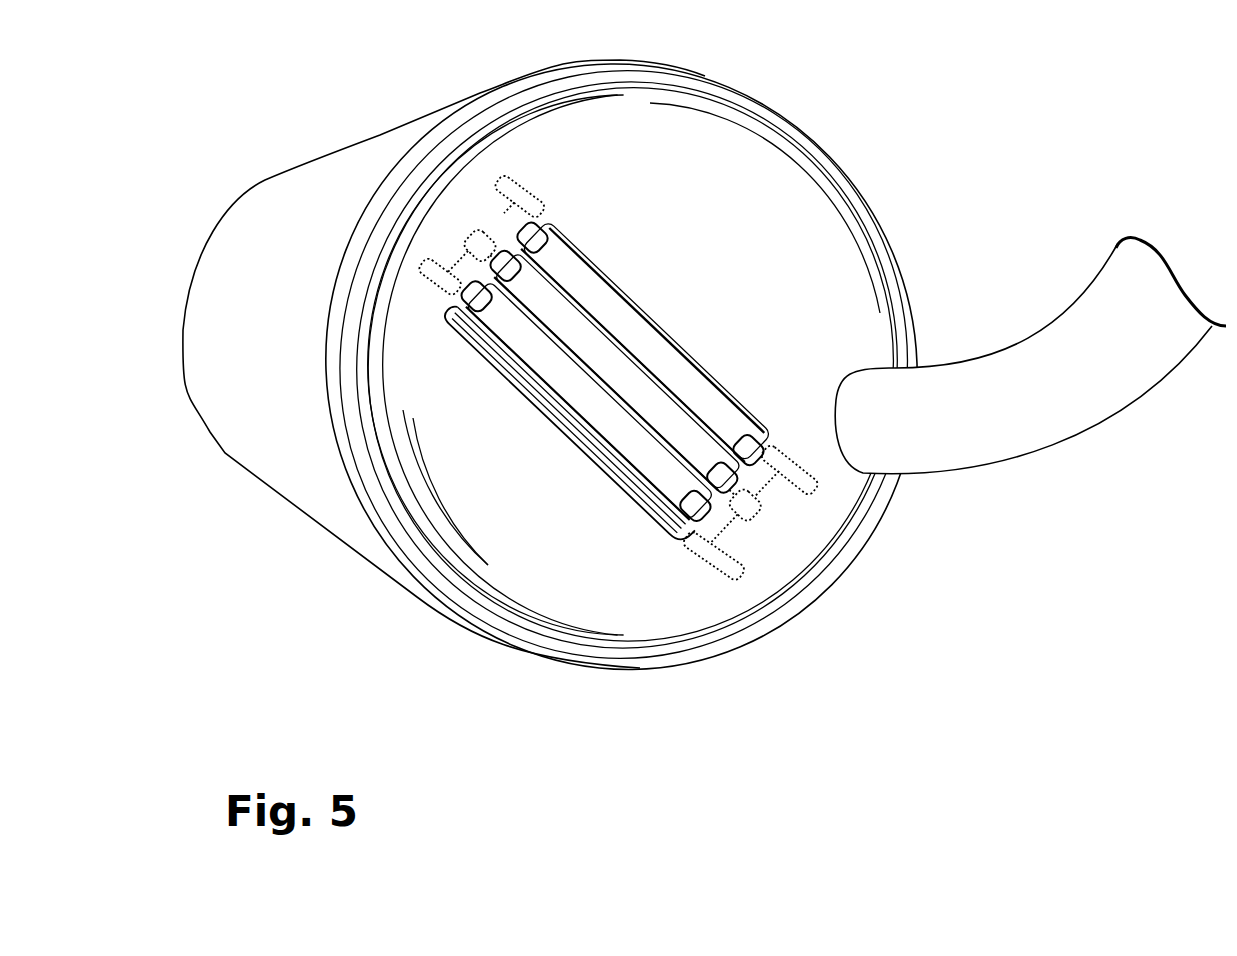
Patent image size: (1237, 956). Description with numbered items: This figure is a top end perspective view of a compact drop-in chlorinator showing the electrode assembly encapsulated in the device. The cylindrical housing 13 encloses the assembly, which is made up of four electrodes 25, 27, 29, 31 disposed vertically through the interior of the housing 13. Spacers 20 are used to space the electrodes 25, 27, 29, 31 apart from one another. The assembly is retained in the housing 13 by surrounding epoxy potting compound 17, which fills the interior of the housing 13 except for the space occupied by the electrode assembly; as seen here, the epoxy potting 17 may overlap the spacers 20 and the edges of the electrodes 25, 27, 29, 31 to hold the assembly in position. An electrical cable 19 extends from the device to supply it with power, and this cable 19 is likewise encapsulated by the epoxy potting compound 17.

The cylindrical housing 13 is at (287, 473).
The epoxy potting compound 17 is at (707, 197).
The electrical cable 19 is at (1007, 443).
The spacers 20 is at (470, 288).
The electrode 25 is at (707, 377).
The electrode 27 is at (618, 342).
The electrode 29 is at (607, 448).
The electrode 31 is at (583, 370).